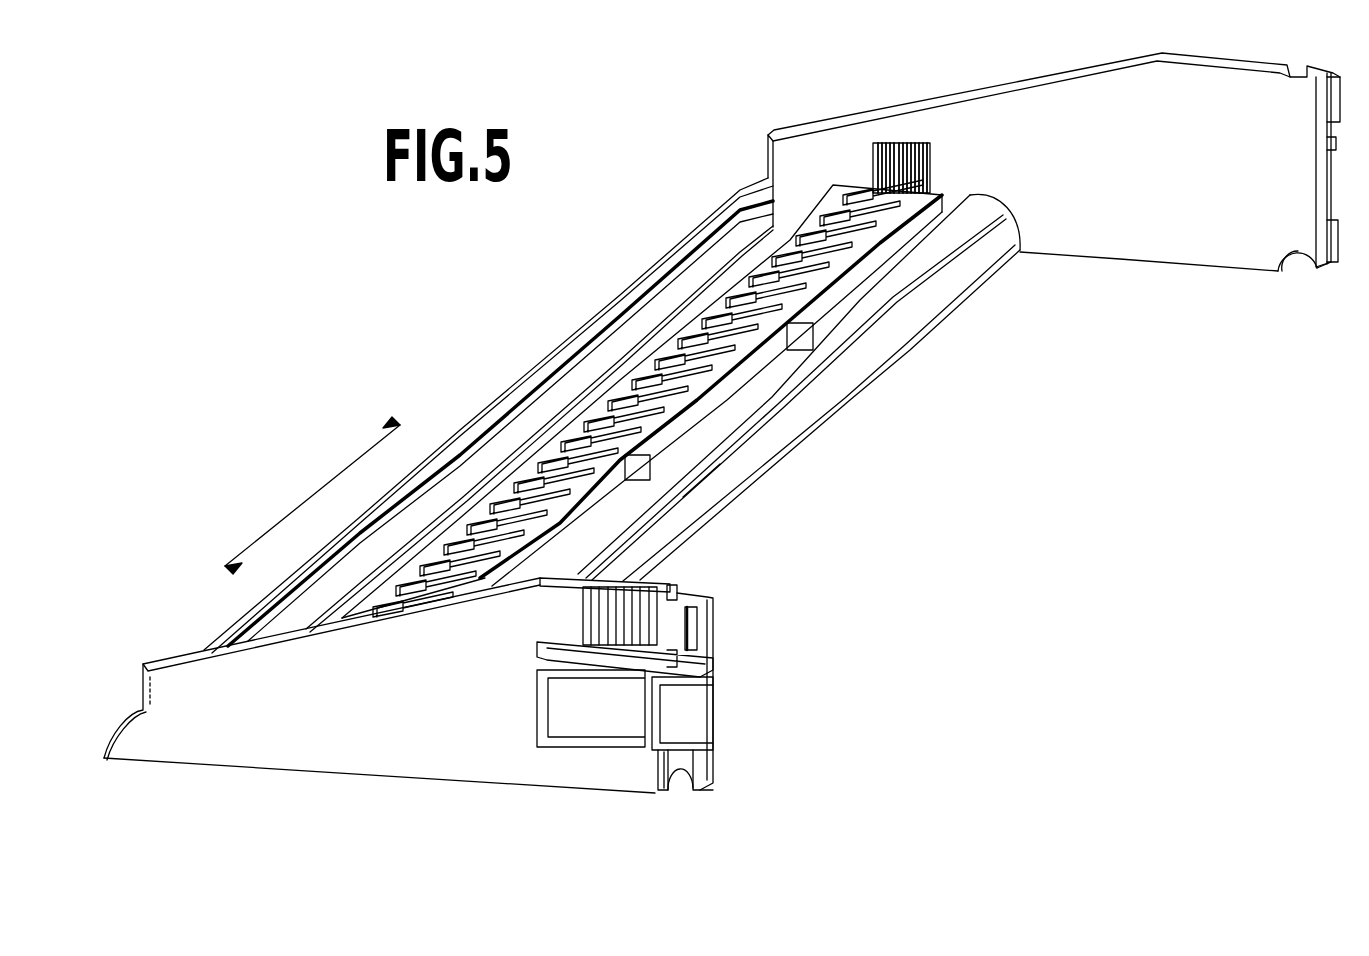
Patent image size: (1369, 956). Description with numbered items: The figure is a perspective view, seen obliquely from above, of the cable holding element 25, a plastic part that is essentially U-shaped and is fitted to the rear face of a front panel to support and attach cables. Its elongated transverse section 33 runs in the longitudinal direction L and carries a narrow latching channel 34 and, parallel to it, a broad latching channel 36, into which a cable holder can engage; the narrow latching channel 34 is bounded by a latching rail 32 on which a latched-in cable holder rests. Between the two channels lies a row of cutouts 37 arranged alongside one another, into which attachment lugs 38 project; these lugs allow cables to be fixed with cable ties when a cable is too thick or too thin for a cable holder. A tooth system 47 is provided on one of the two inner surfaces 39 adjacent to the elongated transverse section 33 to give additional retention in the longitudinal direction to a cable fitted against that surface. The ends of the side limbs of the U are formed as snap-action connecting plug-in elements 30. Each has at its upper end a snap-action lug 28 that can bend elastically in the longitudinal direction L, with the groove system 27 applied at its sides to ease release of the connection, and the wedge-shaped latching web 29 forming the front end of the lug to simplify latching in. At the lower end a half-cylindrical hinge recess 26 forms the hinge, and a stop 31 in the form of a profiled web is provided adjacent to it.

The cable holding element 25 is at (928, 434).
The hinge recess 26 is at (1302, 262).
The groove system 27 is at (607, 612).
The snap-action lug 28 is at (677, 603).
The latching web 29 is at (695, 632).
The snap-action connecting plug-in element 30 is at (1311, 179).
The stop 31 is at (665, 782).
The latching rail 32 is at (806, 408).
The elongated transverse section 33 is at (513, 376).
The narrow latching channel 34 is at (853, 278).
The broad latching channel 36 is at (598, 355).
The cutouts 37 is at (720, 310).
The attachment lugs 38 is at (748, 281).
The inner surface 39 is at (1020, 133).
The tooth system 47 is at (903, 147).
The longitudinal direction L is at (319, 487).